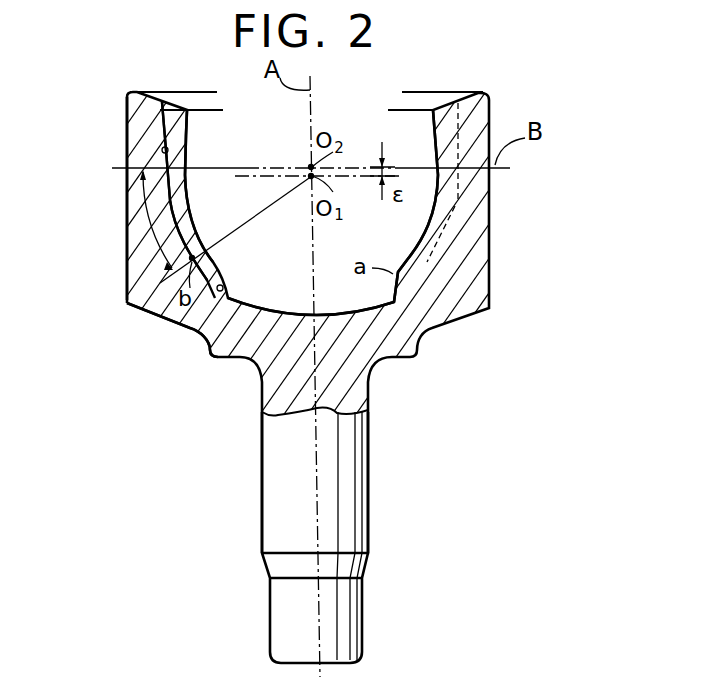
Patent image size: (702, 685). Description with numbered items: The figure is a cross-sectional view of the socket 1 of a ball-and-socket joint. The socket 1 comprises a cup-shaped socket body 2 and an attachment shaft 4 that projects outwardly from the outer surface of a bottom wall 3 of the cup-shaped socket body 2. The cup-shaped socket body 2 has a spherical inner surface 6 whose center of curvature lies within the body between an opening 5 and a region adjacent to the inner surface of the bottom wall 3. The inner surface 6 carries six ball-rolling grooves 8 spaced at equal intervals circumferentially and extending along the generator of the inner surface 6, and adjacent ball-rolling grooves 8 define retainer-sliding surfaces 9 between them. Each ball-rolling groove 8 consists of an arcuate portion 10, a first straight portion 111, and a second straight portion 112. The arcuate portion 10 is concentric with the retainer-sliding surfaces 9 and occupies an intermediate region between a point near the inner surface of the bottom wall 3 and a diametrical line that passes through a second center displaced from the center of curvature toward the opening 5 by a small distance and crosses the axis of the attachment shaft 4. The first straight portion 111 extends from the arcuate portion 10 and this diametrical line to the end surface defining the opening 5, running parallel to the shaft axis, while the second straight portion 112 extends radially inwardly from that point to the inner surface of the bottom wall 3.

The socket 1 is at (123, 112).
The cup-shaped socket body 2 is at (133, 255).
The bottom wall 3 is at (283, 325).
The attachment shaft 4 is at (352, 490).
The opening 5 is at (432, 125).
The spherical inner surface 6 is at (418, 237).
The ball-rolling grooves 8 is at (174, 122).
The retainer-sliding surfaces 9 is at (193, 229).
The arcuate portion 10 is at (170, 202).
The first straight portion 111 is at (162, 149).
The second straight portion 112 is at (195, 331).